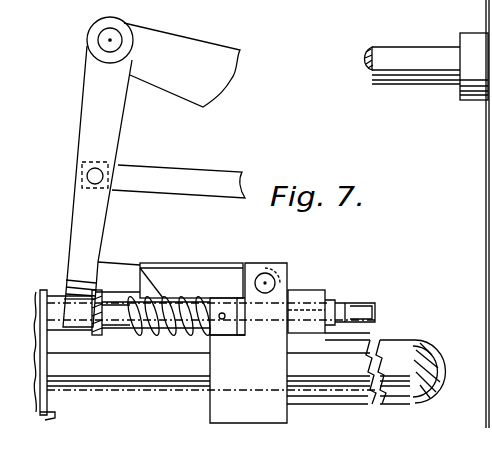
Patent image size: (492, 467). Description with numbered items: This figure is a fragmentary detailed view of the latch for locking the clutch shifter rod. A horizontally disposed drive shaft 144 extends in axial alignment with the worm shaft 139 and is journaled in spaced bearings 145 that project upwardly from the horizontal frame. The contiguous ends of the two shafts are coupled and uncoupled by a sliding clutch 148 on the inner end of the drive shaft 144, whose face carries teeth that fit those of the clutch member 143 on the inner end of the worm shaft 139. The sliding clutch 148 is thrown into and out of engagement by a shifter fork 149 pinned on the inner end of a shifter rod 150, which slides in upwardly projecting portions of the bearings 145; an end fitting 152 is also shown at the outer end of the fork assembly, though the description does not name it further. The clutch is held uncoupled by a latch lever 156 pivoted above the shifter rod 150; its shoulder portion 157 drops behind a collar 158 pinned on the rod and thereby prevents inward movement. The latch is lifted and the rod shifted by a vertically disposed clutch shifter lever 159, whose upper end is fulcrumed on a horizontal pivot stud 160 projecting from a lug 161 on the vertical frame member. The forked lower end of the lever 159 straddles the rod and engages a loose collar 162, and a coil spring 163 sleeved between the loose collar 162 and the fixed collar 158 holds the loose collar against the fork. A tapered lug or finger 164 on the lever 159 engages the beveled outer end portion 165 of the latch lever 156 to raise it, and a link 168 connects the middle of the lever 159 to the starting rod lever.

The worm shaft 139 is at (444, 368).
The clutch member 143 is at (402, 404).
The drive shaft 144 is at (200, 375).
The spaced bearings 145 is at (47, 410).
The sliding clutch 148 is at (335, 408).
The shifter fork 149 is at (297, 298).
The shifter rod 150 is at (52, 328).
The end fitting 152 is at (338, 303).
The latch lever 156 is at (187, 277).
The shoulder portion 157 is at (191, 281).
The collar 158 is at (222, 340).
The clutch shifter lever 159 is at (97, 186).
The pivot stud 160 is at (113, 40).
The lug 161 is at (182, 65).
The loose collar 162 is at (115, 330).
The coil spring 163 is at (157, 326).
The tapered lug or finger 164 is at (112, 277).
The beveled outer end portion 165 is at (153, 288).
The link 168 is at (163, 180).